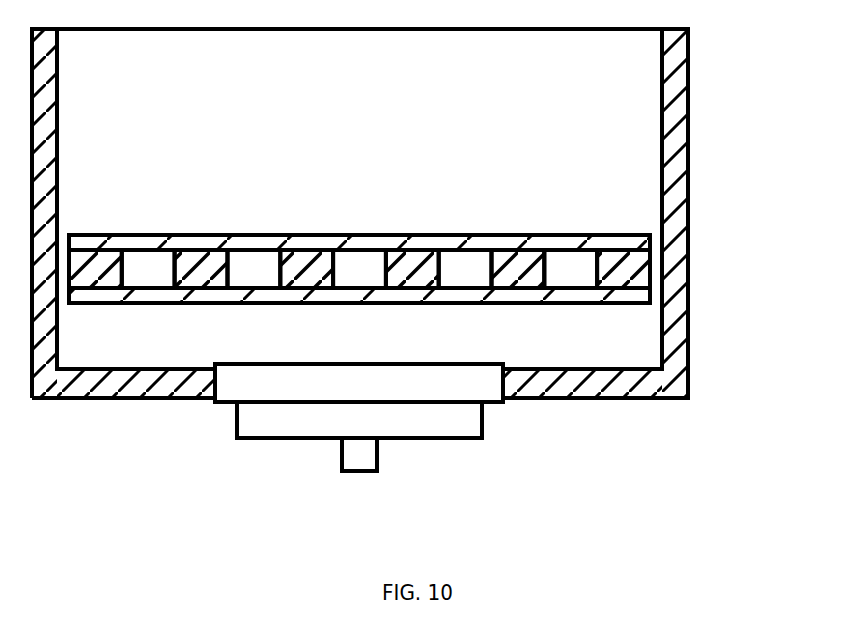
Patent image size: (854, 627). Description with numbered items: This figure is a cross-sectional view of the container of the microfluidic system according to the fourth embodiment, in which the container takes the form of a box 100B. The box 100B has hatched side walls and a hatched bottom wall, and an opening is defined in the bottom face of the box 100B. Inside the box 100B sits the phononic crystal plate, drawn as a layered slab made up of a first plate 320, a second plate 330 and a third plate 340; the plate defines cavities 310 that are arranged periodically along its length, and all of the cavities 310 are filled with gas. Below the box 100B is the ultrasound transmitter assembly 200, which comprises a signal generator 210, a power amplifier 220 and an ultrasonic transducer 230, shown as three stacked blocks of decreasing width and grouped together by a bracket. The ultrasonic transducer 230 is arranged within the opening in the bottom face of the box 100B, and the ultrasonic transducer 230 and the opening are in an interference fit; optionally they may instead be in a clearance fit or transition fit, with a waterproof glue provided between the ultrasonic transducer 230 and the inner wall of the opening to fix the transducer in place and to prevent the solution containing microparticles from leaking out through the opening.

The box 100B is at (818, 233).
The ultrasound transmitter assembly 200 is at (442, 450).
The signal generator 210 is at (583, 534).
The power amplifier 220 is at (583, 490).
The ultrasonic transducer 230 is at (583, 438).
The cavities 310 is at (327, 172).
The first plate 320 is at (478, 172).
The second plate 330 is at (238, 173).
The third plate 340 is at (220, 338).